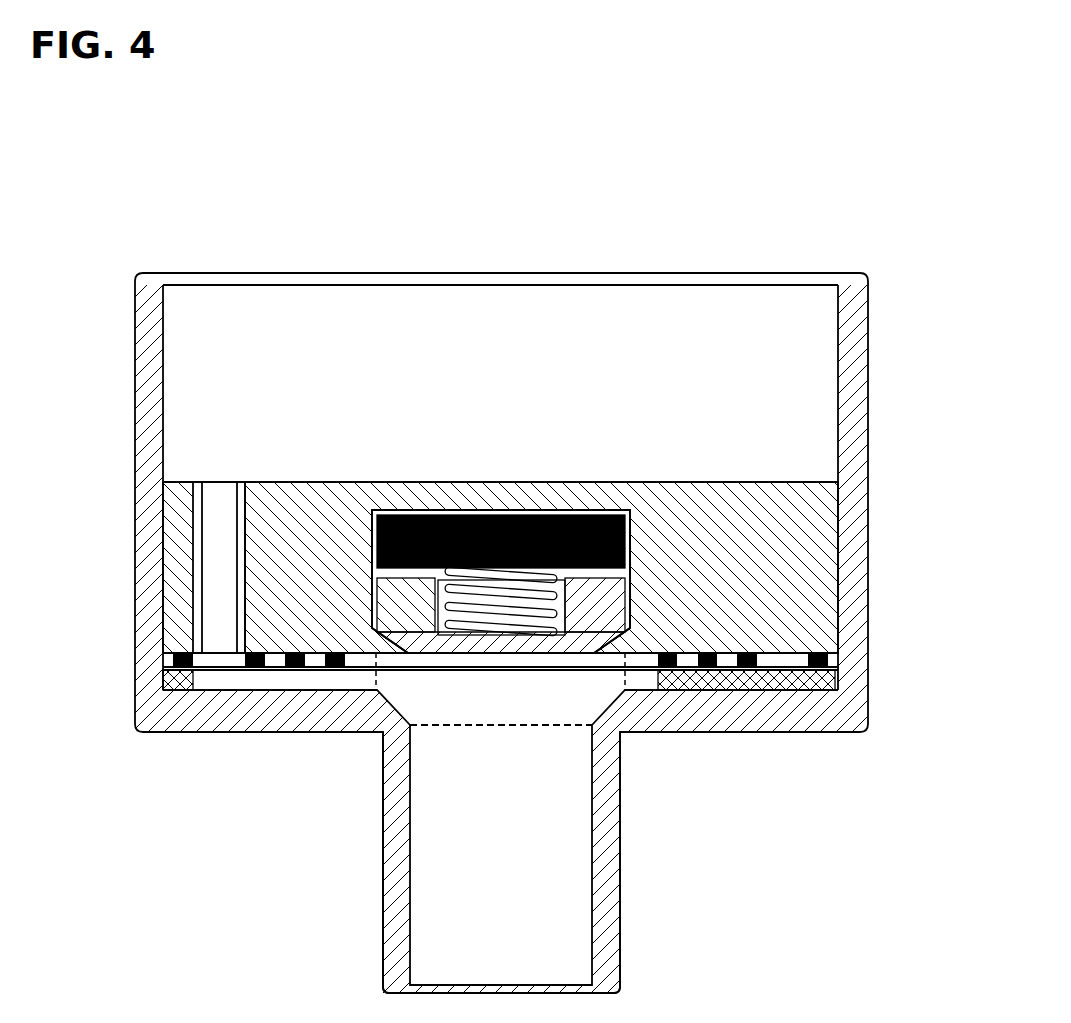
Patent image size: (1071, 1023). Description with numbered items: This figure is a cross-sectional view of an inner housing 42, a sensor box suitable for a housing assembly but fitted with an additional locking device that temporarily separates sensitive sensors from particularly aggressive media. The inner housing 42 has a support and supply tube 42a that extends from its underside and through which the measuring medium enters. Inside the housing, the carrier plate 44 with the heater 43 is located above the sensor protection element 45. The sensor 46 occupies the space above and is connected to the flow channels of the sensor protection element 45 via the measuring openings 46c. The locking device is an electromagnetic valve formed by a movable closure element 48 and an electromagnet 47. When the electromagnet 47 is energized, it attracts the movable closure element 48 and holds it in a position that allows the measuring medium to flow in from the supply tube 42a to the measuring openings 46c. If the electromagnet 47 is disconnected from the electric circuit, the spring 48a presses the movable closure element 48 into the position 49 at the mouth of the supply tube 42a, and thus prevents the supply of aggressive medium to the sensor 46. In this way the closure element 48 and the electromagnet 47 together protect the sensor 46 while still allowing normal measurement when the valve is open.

The inner housing 42 is at (857, 430).
The support and supply tube 42a is at (605, 855).
The heater 43 is at (828, 660).
The carrier plate 44 is at (793, 563).
The sensor protection element 45 is at (725, 682).
The sensor 46 is at (738, 385).
The measuring openings 46c is at (200, 552).
The electromagnet 47 is at (490, 515).
The movable closure element 48 is at (400, 620).
The spring 48a is at (552, 620).
The position 49 is at (502, 727).